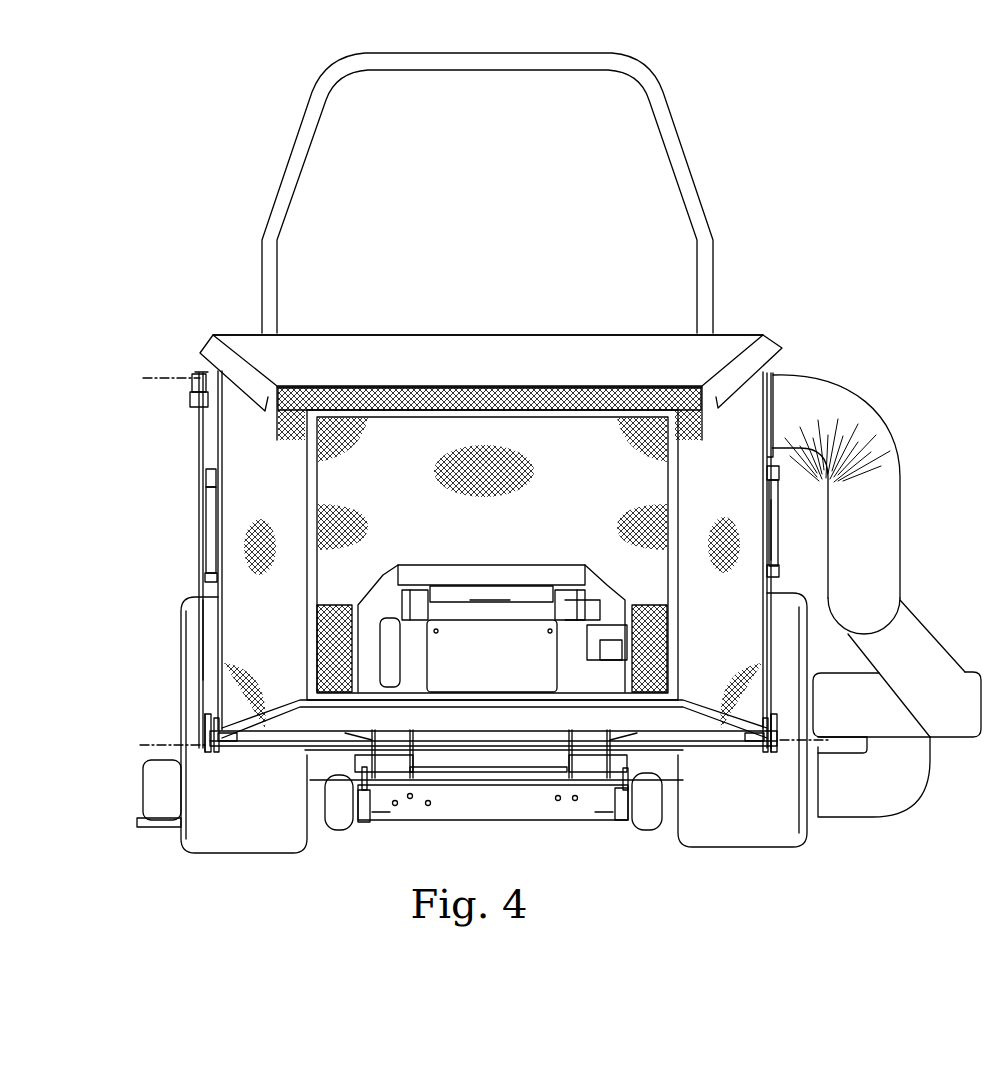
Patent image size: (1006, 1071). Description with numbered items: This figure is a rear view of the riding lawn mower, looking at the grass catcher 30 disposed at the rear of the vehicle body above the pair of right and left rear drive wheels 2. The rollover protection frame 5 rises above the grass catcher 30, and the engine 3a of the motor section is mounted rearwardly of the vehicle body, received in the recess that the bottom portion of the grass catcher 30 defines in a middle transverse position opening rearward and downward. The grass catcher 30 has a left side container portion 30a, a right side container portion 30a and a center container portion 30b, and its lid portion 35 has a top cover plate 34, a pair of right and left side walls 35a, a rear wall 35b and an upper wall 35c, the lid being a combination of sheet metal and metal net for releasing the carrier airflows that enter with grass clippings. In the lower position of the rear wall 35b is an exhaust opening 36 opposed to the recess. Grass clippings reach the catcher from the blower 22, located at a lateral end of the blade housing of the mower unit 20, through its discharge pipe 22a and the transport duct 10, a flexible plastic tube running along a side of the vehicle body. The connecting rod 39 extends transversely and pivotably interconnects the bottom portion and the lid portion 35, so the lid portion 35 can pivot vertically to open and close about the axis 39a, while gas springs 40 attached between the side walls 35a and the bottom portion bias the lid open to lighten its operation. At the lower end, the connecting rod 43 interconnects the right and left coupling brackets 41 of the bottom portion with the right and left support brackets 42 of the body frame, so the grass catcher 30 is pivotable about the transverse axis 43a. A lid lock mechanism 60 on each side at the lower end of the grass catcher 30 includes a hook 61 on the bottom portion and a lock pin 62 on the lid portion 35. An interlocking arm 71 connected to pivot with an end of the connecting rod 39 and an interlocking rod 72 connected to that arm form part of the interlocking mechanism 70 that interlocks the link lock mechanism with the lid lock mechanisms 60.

The rear drive wheel 2 is at (205, 843).
The engine 3a is at (418, 575).
The rollover protection frame 5 is at (688, 157).
The transport duct 10 is at (890, 447).
The mower unit 20 is at (535, 830).
The blower 22 is at (831, 672).
The discharge pipe 22a is at (935, 655).
The grass catcher 30 is at (427, 312).
The side container portion 30a is at (232, 437).
The center container portion 30b is at (407, 433).
The top cover plate 34 is at (602, 330).
The lid portion 35 is at (501, 330).
The side wall 35a is at (210, 640).
The rear wall 35b is at (328, 596).
The upper wall 35c is at (556, 387).
The exhaust opening 36 is at (483, 578).
The connecting rod 39 is at (200, 368).
The axis 39a is at (147, 378).
The gas spring 40 is at (208, 530).
The coupling bracket 41 is at (218, 752).
The support bracket 42 is at (373, 740).
The connecting rod 43 is at (492, 730).
The axis 43a is at (462, 745).
The lid lock mechanism 60 is at (196, 728).
The hook 61 is at (208, 756).
The lock pin 62 is at (232, 742).
The interlocking mechanism 70 is at (196, 576).
The interlocking arm 71 is at (191, 395).
The interlocking rod 72 is at (206, 478).